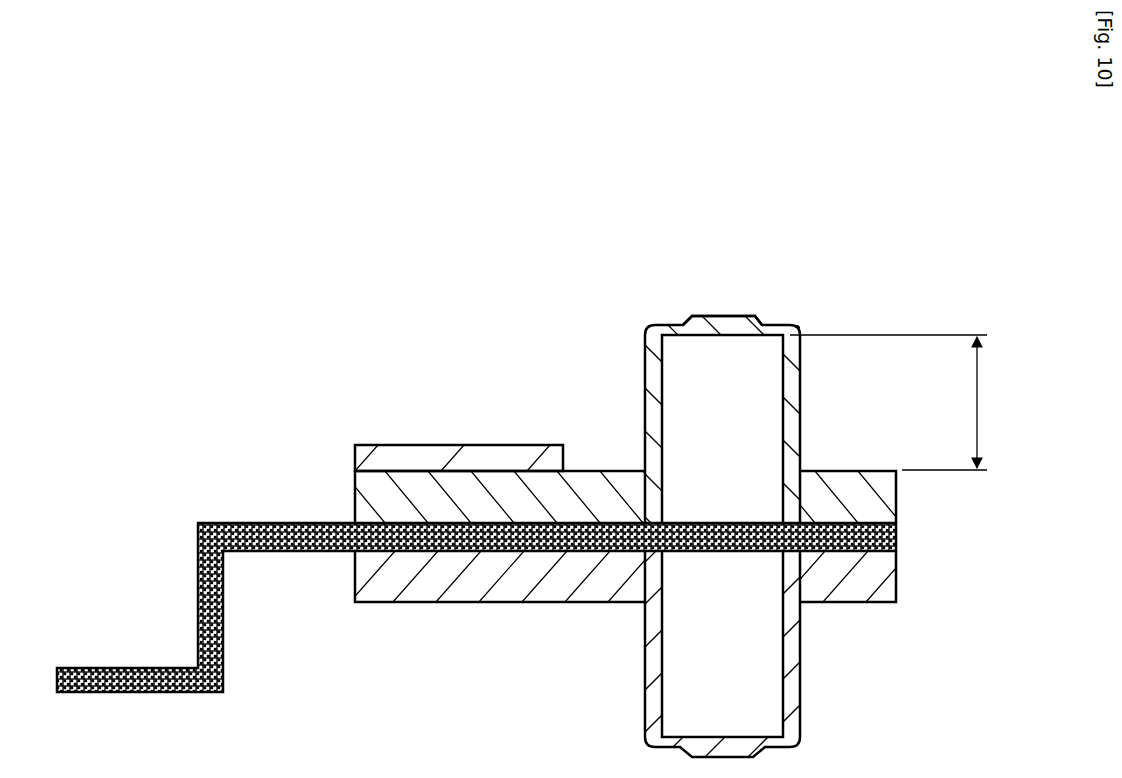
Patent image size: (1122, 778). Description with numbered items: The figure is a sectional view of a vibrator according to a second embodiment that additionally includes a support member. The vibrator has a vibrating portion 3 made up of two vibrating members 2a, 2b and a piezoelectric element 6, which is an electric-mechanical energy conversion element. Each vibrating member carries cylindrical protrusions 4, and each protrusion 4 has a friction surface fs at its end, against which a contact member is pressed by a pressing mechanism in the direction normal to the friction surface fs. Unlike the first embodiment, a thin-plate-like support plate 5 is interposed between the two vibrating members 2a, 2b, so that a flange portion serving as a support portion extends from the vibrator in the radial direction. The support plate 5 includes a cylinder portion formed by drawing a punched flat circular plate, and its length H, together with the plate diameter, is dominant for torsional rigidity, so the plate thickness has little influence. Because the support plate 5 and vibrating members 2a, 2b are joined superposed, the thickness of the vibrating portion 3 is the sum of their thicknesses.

The vibrating member 2a is at (885, 505).
The vibrating member 2b is at (657, 576).
The vibrating portion 3 is at (669, 536).
The protrusion 4 is at (790, 378).
The support plate 5 is at (208, 680).
The piezoelectric element 6 is at (437, 462).
The friction surface fs is at (737, 311).
The length of cylinder portion H is at (895, 402).